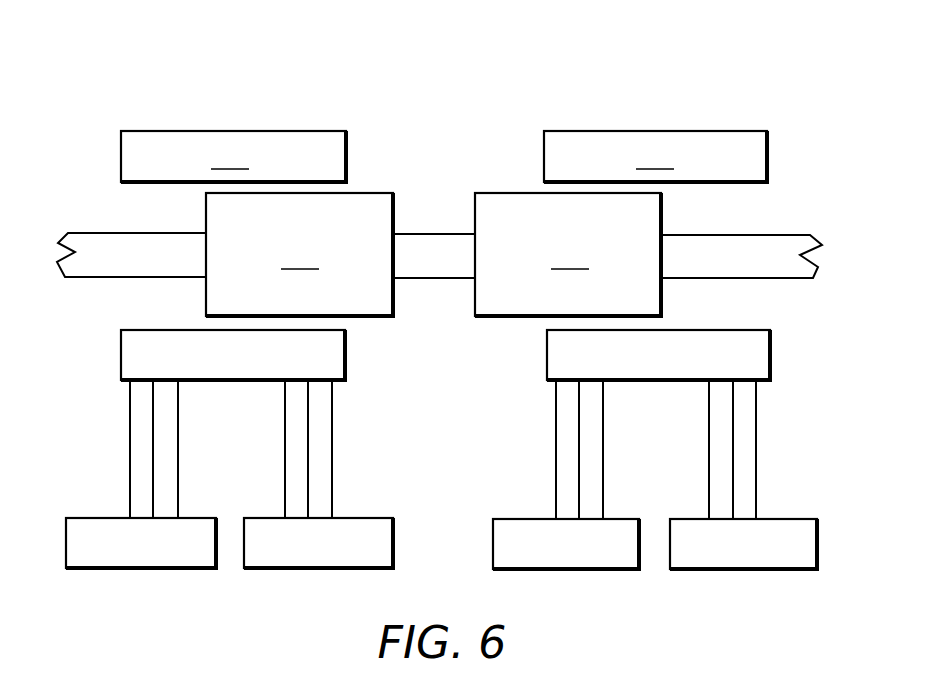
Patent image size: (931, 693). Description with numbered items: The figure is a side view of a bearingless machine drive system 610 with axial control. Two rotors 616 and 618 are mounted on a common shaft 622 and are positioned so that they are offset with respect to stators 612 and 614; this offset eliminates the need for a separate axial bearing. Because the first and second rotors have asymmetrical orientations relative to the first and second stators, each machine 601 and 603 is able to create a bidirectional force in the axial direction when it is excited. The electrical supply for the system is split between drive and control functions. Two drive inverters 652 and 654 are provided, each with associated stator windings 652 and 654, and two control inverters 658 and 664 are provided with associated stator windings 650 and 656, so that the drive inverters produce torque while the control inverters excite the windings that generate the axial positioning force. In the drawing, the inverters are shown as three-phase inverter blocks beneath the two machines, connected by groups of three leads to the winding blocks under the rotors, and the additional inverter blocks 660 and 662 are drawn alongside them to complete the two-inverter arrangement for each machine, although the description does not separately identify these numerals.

The machine 601 is at (233, 119).
The machine 603 is at (655, 120).
The bearingless machine drive system 610 is at (756, 84).
The stator 612 is at (190, 126).
The stator 614 is at (706, 126).
The rotor 616 is at (299, 254).
The rotor 618 is at (568, 254).
The shaft 622 is at (438, 232).
The stator winding 650 is at (178, 472).
The drive inverter 652 is at (332, 415).
The drive inverter 654 is at (603, 488).
The stator winding 656 is at (757, 430).
The control inverter 658 is at (87, 518).
The second three-phase inverter 660 is at (362, 518).
The third three-phase inverter 662 is at (515, 519).
The control inverter 664 is at (790, 519).